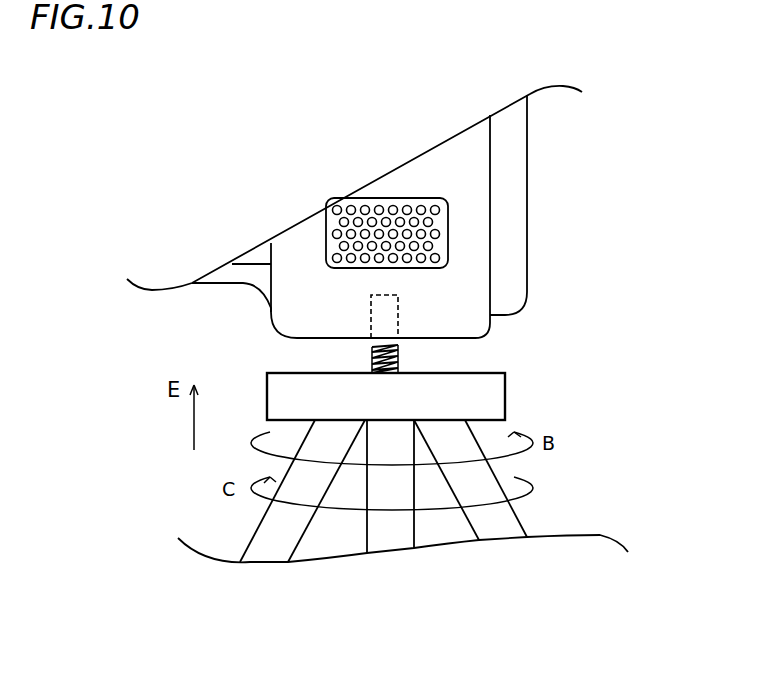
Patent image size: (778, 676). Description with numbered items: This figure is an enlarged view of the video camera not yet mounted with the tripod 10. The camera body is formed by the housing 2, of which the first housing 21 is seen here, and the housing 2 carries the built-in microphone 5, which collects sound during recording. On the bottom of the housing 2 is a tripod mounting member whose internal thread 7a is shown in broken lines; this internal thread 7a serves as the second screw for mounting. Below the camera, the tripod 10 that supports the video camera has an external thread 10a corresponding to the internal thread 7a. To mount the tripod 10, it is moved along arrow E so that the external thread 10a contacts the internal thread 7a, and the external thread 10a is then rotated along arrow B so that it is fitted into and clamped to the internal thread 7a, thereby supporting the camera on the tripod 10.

The housing 2 is at (507, 178).
The first housing 21 is at (507, 140).
The built-in microphone 5 is at (442, 245).
The internal thread 7a is at (398, 295).
The tripod 10 is at (485, 523).
The external thread 10a is at (398, 362).